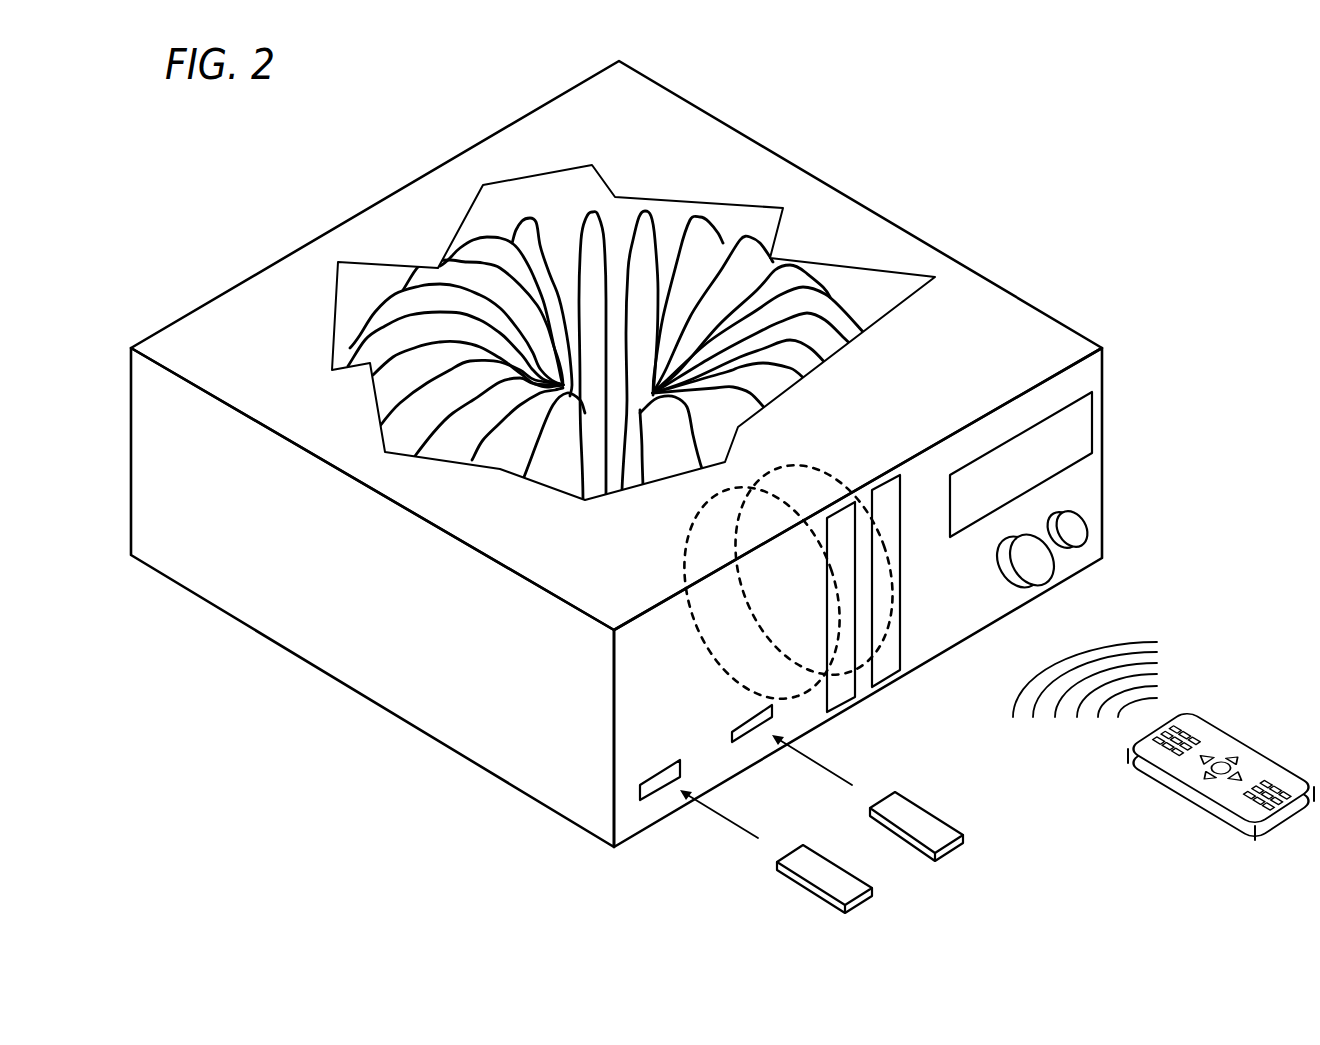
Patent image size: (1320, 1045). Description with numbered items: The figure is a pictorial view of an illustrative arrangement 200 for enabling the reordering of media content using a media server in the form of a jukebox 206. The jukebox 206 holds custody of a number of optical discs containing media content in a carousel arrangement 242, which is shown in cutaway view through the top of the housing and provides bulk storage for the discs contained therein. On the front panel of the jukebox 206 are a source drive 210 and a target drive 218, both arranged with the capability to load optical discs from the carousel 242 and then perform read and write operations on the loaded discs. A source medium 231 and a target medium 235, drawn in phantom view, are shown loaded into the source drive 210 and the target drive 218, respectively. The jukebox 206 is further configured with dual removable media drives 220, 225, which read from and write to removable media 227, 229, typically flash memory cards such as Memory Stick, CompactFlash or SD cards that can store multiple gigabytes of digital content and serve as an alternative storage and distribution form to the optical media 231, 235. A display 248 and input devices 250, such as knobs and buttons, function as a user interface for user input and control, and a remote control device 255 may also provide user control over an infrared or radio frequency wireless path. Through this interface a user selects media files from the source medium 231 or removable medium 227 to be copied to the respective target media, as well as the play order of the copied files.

The arrangement 200 is at (958, 151).
The jukebox 206 is at (443, 751).
The carousel arrangement 242 is at (560, 206).
The source drive 210 is at (843, 704).
The target drive 218 is at (887, 682).
The removable media drive 220 is at (655, 778).
The removable media drive 225 is at (740, 727).
The removable medium 227 is at (783, 873).
The removable medium 229 is at (918, 852).
The source medium 231 is at (688, 543).
The target medium 235 is at (802, 470).
The display 248 is at (1090, 413).
The input devices 250 is at (1028, 586).
The remote control device 255 is at (1147, 782).